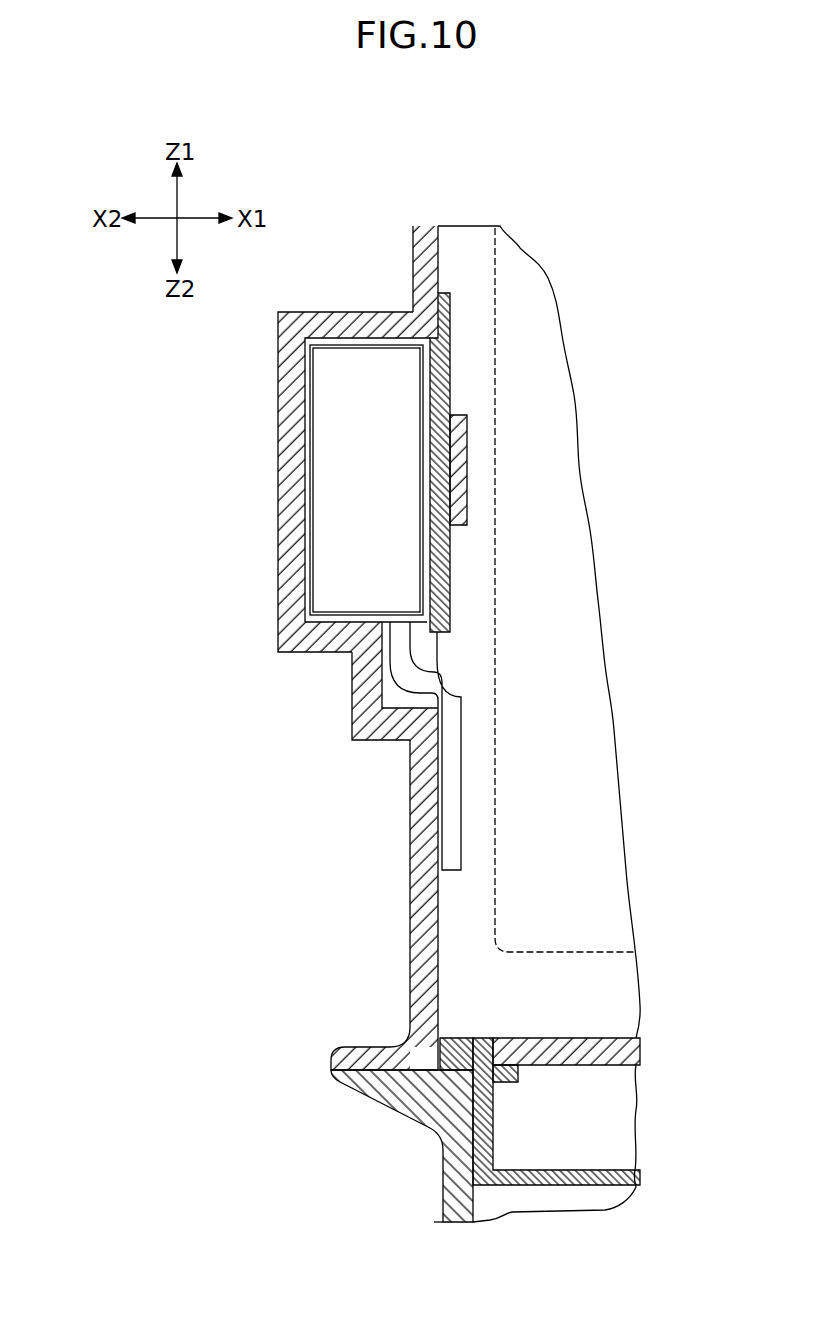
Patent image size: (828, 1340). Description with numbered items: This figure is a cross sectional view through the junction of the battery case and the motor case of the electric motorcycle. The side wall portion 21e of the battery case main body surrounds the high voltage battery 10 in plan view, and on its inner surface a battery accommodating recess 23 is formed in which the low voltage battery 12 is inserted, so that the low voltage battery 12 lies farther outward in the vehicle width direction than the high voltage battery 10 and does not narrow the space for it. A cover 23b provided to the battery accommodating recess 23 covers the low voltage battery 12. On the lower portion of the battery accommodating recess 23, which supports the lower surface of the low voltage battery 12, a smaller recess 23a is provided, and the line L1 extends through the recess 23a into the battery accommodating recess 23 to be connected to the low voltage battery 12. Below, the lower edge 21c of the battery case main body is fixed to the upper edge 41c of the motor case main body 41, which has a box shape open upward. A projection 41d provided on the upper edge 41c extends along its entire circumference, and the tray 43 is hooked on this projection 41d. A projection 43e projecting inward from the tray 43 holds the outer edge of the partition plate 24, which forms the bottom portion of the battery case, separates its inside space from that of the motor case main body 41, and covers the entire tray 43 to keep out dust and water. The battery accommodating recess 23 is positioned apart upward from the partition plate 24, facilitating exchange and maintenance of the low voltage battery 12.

The high voltage battery 10 is at (545, 955).
The low voltage battery 12 is at (322, 550).
The battery accommodating recess 23 is at (290, 618).
The recess 23a is at (360, 685).
The cover 23b is at (440, 583).
The side wall portion 21e is at (418, 903).
The lower edge 21c is at (350, 1060).
The line L1 is at (453, 738).
The partition plate 24 is at (598, 1045).
The projection 41d is at (462, 1060).
The motor case main body 41 is at (447, 1193).
The upper edge 41c is at (348, 1085).
The tray 43 is at (562, 1187).
The projection 43e is at (503, 1080).